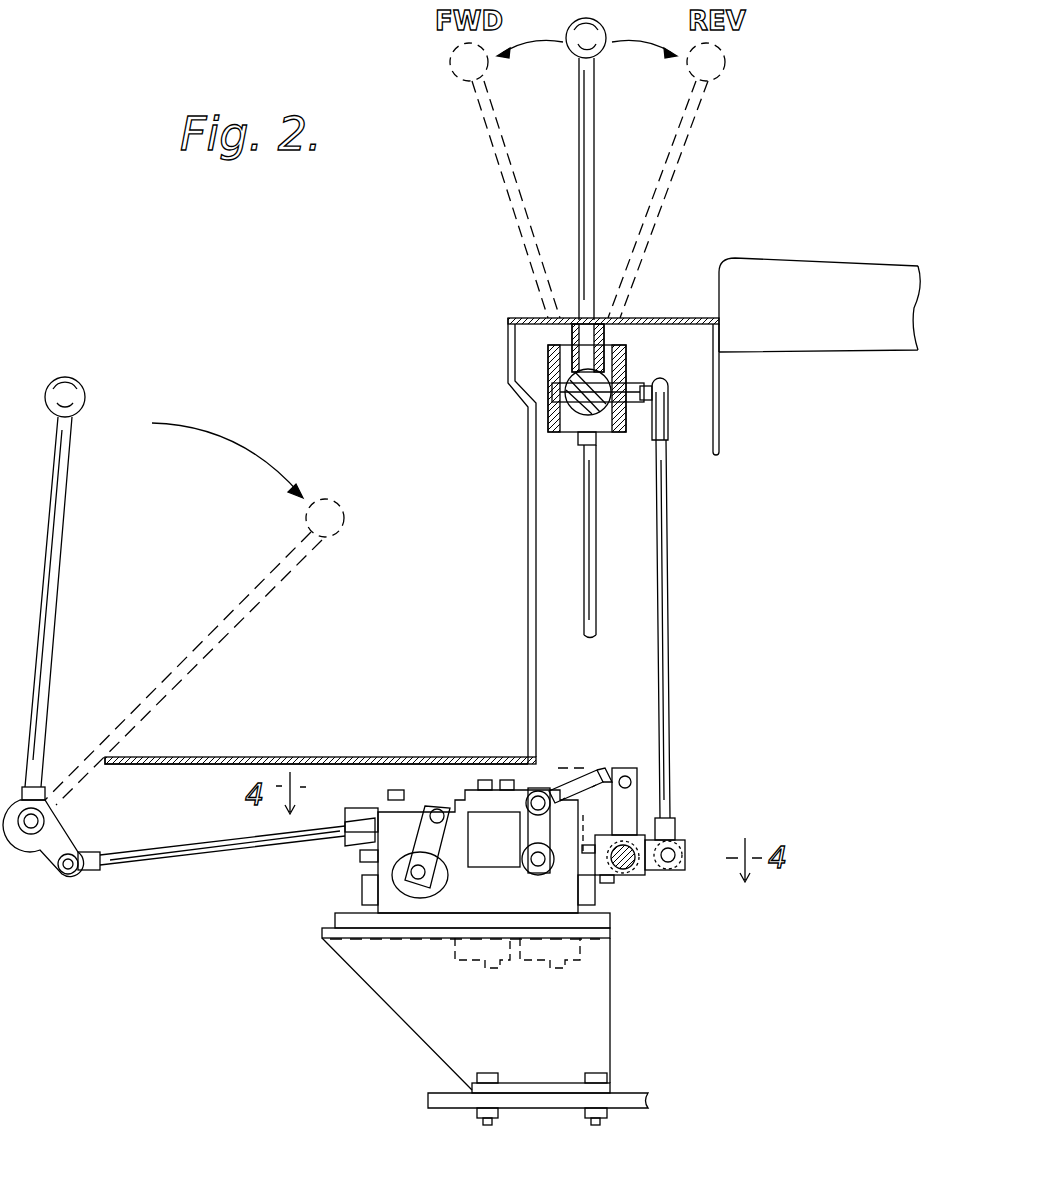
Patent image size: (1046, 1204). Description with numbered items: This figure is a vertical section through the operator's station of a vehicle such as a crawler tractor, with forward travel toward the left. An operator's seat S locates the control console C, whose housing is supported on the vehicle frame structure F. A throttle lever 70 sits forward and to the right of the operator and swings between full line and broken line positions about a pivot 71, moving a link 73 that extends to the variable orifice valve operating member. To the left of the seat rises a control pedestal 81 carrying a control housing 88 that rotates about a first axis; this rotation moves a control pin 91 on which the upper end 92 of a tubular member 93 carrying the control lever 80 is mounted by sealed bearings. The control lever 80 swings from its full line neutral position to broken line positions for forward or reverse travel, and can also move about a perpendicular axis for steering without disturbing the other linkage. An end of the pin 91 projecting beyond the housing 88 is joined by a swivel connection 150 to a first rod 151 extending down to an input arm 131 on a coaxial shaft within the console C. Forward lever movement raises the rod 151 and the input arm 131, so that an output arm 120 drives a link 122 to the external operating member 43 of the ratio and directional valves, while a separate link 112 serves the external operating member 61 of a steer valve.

The control lever 80 is at (595, 133).
The control pedestal 81 is at (530, 628).
The control housing 88 is at (627, 368).
The upper end 92 is at (600, 342).
The control pin 91 is at (625, 404).
The tubular member 93 is at (572, 420).
The swivel connection 150 is at (660, 410).
The first rod 151 is at (662, 667).
The output arm 120 is at (633, 812).
The input arm 131 is at (650, 872).
The external operating member 43 is at (540, 832).
The link 122 is at (583, 792).
The external operating member 61 is at (426, 840).
The link 112 is at (467, 812).
The link 73 is at (207, 845).
The pivot 71 is at (38, 830).
The throttle lever 70 is at (50, 577).
The operator's seat S is at (826, 272).
The control console C is at (347, 886).
The frame structure F is at (611, 993).